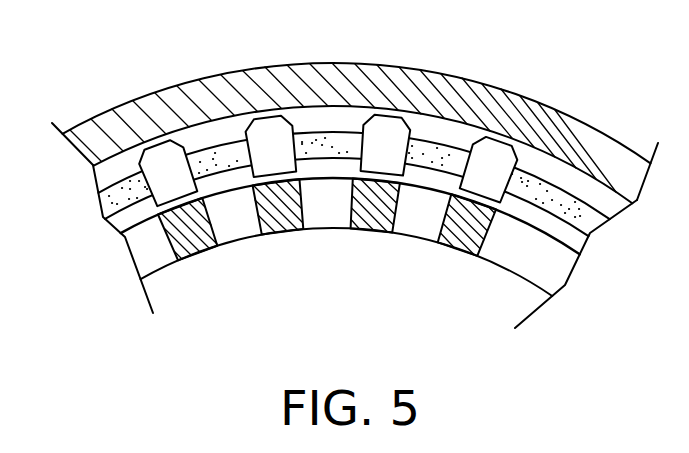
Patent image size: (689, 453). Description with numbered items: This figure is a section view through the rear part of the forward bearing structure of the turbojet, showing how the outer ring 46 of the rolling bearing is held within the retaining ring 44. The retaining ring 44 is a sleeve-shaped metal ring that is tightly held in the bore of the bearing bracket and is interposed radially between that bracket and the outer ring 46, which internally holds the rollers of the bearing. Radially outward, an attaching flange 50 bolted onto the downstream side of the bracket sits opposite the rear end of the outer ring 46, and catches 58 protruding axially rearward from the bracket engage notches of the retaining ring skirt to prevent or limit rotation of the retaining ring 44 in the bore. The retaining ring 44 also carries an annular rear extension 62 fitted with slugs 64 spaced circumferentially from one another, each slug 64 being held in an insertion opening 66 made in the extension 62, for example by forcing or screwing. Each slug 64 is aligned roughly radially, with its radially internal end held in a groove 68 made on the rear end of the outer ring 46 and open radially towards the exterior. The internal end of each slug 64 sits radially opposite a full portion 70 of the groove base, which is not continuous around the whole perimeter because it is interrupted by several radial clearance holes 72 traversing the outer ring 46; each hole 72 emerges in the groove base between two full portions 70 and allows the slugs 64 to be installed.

The retaining ring 44 is at (103, 220).
The outer ring 46 is at (415, 245).
The attaching flange 50 is at (578, 132).
The catch 58 is at (378, 142).
The annular rear extension 62 is at (107, 197).
The slug 64 is at (165, 163).
The insertion opening 66 is at (258, 148).
The groove 68 is at (543, 228).
The full portion 70 is at (382, 212).
The radial clearance hole 72 is at (245, 228).